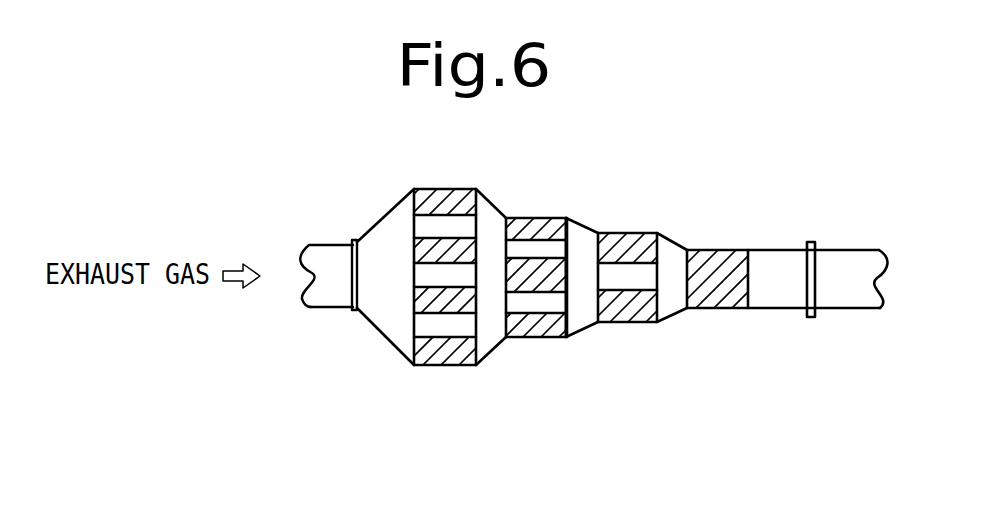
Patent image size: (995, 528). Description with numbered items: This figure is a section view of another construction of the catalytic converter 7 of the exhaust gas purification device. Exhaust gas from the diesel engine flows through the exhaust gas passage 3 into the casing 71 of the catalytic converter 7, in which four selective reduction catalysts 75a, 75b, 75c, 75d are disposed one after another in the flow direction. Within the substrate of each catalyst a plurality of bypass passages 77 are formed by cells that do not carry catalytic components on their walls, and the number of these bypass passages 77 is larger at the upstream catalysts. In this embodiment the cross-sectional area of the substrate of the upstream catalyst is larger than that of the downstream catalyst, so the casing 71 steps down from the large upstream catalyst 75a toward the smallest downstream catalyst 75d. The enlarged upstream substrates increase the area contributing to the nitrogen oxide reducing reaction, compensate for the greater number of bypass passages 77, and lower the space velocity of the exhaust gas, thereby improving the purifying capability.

The exhaust gas passage 3 is at (324, 257).
The catalytic converter 7 is at (586, 186).
The casing 71 is at (586, 224).
The selective reduction catalyst 75a is at (446, 358).
The selective reduction catalyst 75b is at (538, 328).
The selective reduction catalyst 75c is at (626, 317).
The selective reduction catalyst 75d is at (722, 303).
The bypass passages 77 is at (416, 329).